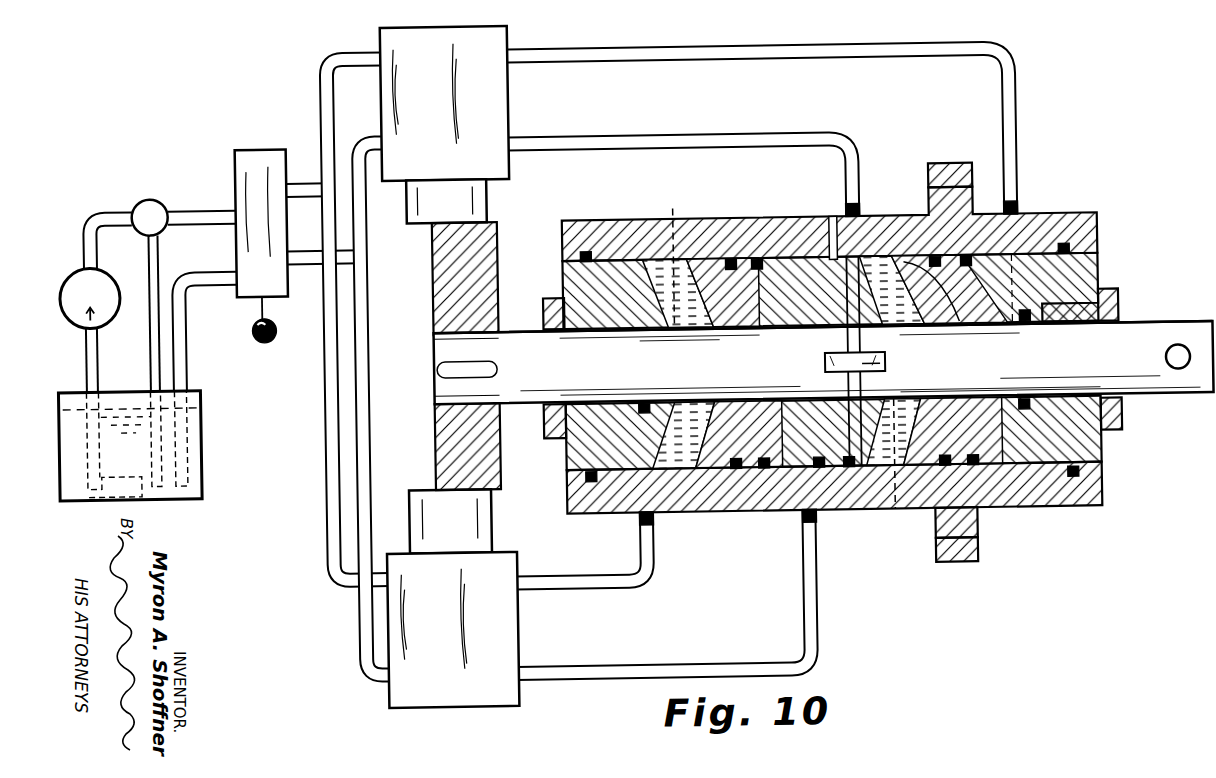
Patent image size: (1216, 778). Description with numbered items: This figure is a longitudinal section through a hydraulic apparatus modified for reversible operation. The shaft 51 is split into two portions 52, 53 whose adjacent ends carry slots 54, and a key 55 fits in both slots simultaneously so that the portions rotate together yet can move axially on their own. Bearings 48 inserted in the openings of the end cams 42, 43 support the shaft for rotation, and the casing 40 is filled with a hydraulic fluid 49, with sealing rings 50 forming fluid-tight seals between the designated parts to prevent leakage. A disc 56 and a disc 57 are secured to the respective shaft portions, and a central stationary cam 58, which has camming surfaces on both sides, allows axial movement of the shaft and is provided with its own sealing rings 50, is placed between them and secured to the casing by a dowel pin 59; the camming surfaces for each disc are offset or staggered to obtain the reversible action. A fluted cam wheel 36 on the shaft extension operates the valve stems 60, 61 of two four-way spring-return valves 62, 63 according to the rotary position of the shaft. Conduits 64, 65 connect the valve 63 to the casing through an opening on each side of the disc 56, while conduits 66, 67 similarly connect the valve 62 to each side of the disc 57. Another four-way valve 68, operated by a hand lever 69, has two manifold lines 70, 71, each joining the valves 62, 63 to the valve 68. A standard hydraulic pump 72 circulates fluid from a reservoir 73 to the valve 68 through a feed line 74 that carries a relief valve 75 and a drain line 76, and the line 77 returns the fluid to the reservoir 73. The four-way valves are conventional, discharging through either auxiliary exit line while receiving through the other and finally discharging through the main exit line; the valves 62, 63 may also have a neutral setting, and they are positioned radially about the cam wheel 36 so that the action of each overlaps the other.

The fluted cam wheel 36 is at (499, 249).
The casing 40 is at (1080, 226).
The end cam 42 is at (566, 453).
The end cam 43 is at (1100, 453).
The bearing 48 is at (1119, 301).
The hydraulic fluid 49 is at (897, 515).
The sealing ring 50 is at (637, 327).
The shaft 51 is at (1148, 331).
The shaft portion 52 is at (531, 329).
The shaft portion 53 is at (1168, 401).
The slot 54 is at (830, 357).
The key 55 is at (885, 368).
The disc 56 is at (748, 228).
The disc 57 is at (928, 256).
The central stationary cam 58 is at (868, 470).
The dowel pin 59 is at (833, 218).
The valve stem 60 is at (489, 195).
The valve stem 61 is at (489, 527).
The four-way spring-return valve 62 is at (512, 33).
The four-way spring-return valve 63 is at (514, 619).
The conduit 64 is at (657, 580).
The conduit 65 is at (819, 628).
The conduit 66 is at (720, 133).
The conduit 67 is at (832, 46).
The four-way valve 68 is at (238, 160).
The hand lever 69 is at (277, 326).
The manifold line 70 is at (324, 95).
The manifold line 71 is at (369, 226).
The hydraulic pump 72 is at (76, 263).
The reservoir 73 is at (199, 470).
The feed line 74 is at (110, 204).
The relief valve 75 is at (159, 192).
The drain line 76 is at (158, 262).
The return line 77 is at (186, 372).